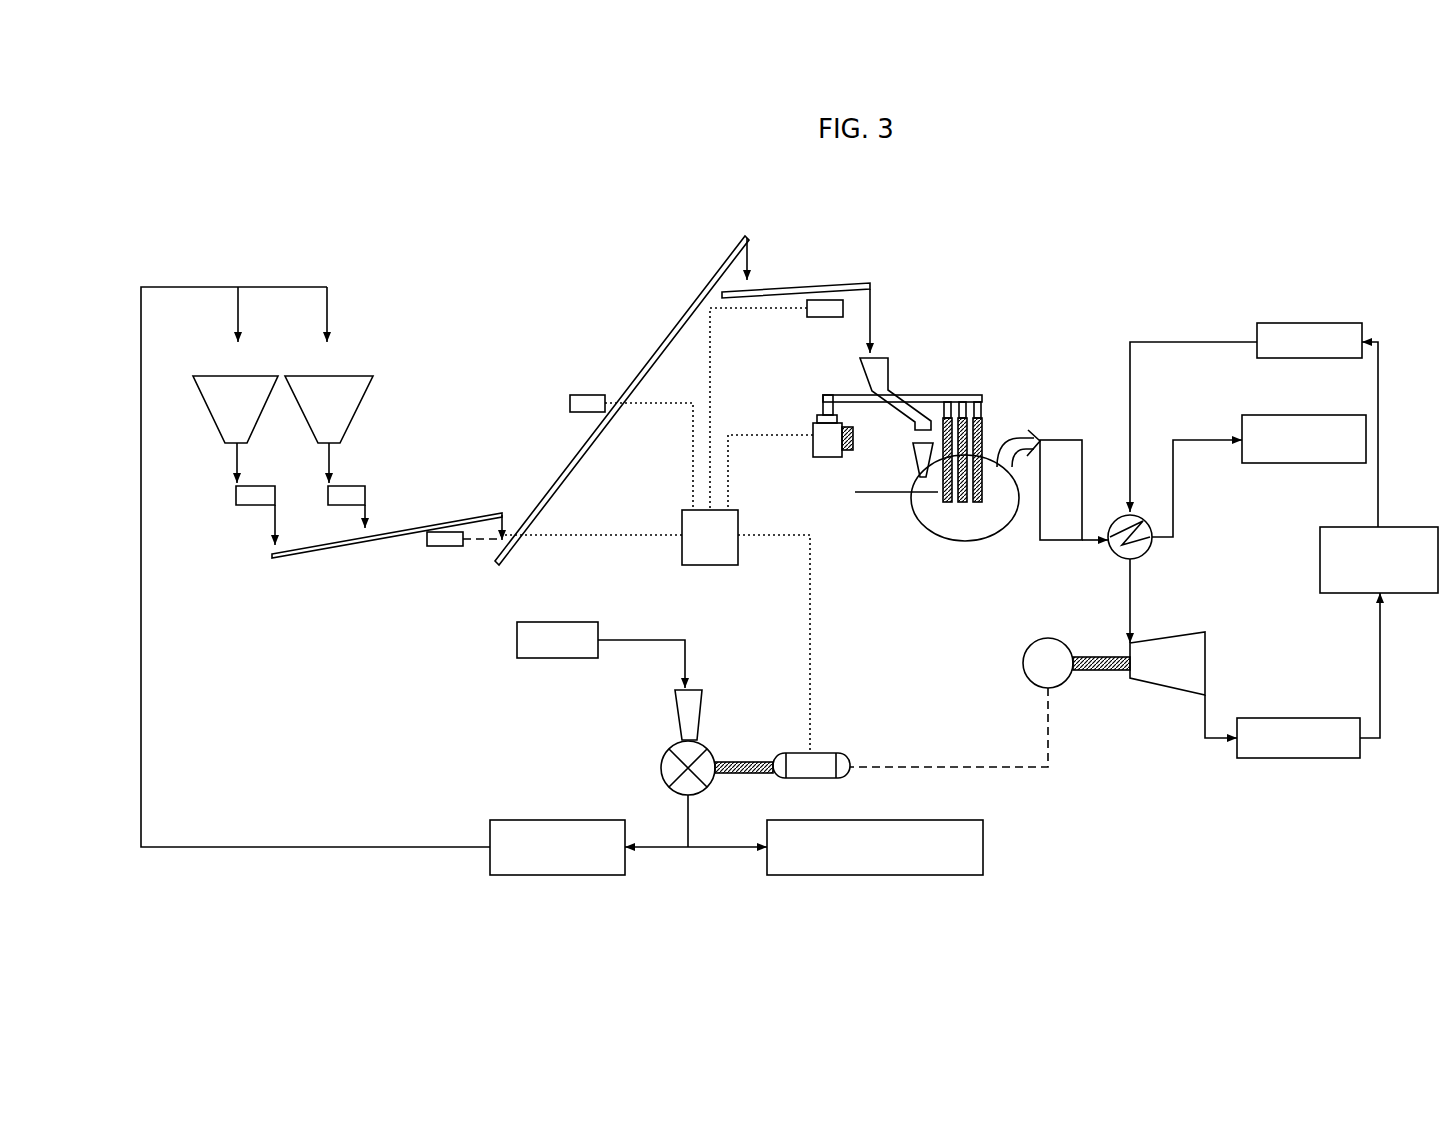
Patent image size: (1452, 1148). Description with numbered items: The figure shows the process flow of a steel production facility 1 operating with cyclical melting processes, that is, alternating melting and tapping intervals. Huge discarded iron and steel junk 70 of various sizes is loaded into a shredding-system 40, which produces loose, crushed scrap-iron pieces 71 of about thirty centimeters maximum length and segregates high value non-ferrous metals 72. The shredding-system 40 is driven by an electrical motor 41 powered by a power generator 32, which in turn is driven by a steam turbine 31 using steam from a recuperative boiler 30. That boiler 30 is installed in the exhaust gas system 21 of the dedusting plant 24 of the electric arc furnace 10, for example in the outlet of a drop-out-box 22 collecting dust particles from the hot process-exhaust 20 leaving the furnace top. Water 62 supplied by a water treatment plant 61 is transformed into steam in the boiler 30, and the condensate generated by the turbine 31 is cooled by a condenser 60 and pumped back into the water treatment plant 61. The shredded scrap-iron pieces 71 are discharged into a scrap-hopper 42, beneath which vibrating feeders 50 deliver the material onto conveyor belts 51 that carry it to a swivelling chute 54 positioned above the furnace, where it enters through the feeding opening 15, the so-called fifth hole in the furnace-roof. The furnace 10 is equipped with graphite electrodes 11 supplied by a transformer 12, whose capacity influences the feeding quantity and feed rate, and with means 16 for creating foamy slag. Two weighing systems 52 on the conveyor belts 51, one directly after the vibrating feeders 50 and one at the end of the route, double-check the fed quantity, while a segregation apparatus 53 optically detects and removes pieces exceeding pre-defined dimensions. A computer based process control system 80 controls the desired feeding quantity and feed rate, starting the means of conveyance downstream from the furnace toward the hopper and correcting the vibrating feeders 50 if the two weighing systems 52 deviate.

The steel production facility 1 is at (1008, 284).
The electric arc furnace 10 is at (985, 542).
The graphite electrode 11 is at (966, 502).
The transformer 12 is at (826, 458).
The feeding opening 15 is at (913, 457).
The means for creating foamy slag 16 is at (882, 494).
The hot process-exhaust 20 is at (1020, 432).
The exhaust gas system 21 is at (1173, 488).
The drop-out-box 22 is at (1082, 490).
The dedusting plant 24 is at (1296, 464).
The recuperative boiler 30 is at (1143, 551).
The steam turbine 31 is at (1196, 666).
The power generator 32 is at (1023, 664).
The shredding-system 40 is at (690, 705).
The electrical motor 41 is at (808, 778).
The scrap-hopper 42 is at (346, 405).
The vibrating feeder 50 is at (354, 492).
The conveyor belt 51 is at (345, 549).
The weighing system 52 is at (445, 547).
The segregation apparatus 53 is at (570, 403).
The swivelling chute 54 is at (881, 372).
The condenser 60 is at (1292, 735).
The water treatment plant 61 is at (1320, 572).
The water 62 is at (1296, 345).
The steel junk 70 is at (558, 640).
The shredded pieces of scrap-iron 71 is at (558, 838).
The high value non-ferrous metals 72 is at (903, 840).
The computer based process control system 80 is at (708, 548).